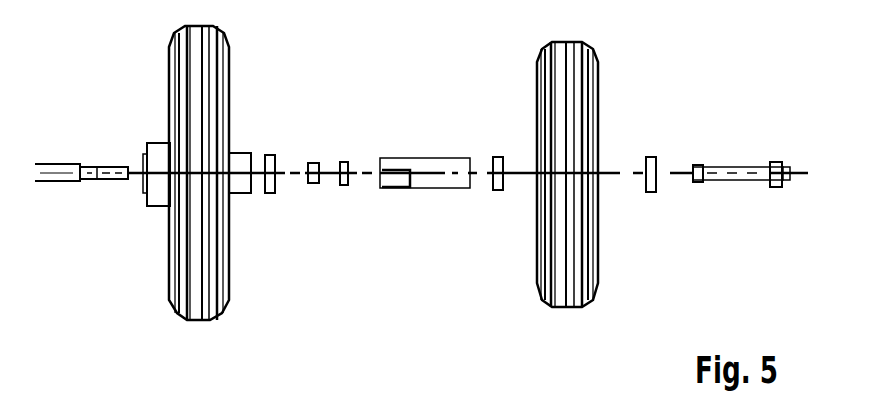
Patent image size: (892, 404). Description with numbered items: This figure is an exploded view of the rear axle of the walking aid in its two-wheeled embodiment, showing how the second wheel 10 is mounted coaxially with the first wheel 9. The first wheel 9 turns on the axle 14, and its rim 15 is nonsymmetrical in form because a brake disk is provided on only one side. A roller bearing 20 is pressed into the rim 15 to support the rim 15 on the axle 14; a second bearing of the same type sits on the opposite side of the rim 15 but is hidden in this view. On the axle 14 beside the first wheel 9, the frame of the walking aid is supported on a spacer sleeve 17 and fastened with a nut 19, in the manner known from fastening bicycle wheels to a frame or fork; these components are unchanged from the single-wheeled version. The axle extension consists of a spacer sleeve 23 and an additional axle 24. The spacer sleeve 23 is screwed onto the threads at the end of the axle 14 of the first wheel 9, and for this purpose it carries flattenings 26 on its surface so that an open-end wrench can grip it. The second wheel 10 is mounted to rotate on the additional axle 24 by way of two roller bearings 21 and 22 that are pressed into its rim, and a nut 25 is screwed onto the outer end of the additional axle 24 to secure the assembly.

The first wheel 9 is at (178, 262).
The second wheel 10 is at (582, 265).
The axle 14 is at (53, 163).
The rim 15 is at (155, 155).
The spacer sleeve 17 is at (313, 163).
The nut 19 is at (343, 162).
The roller bearing 20 is at (268, 153).
The roller bearing 21 is at (497, 157).
The roller bearing 22 is at (649, 157).
The spacer sleeve 23 is at (424, 158).
The additional axle 24 is at (720, 165).
The nut 25 is at (776, 162).
The flattenings 26 is at (392, 188).